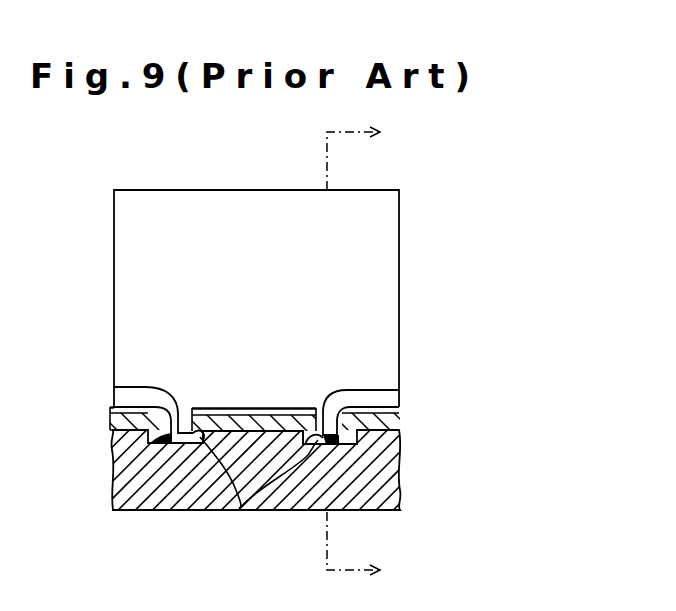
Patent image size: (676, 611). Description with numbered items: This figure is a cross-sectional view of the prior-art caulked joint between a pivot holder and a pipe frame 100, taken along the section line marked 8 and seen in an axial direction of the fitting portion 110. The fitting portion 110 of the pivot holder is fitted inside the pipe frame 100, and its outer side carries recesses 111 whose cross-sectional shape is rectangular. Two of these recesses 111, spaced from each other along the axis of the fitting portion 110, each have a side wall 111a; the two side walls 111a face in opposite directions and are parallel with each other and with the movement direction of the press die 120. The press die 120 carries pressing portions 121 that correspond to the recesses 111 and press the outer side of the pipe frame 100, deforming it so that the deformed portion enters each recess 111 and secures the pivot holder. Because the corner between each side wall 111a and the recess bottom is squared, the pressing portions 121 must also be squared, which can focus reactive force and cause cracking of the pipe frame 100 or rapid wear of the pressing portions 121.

The section line 8- 8 is at (369, 352).
The pipe frame 100 is at (112, 422).
The fitting portion 110 is at (128, 510).
The recess 111 is at (114, 467).
The side wall 111a is at (238, 510).
The press die 120 is at (398, 223).
The pressing portion 121 is at (116, 388).